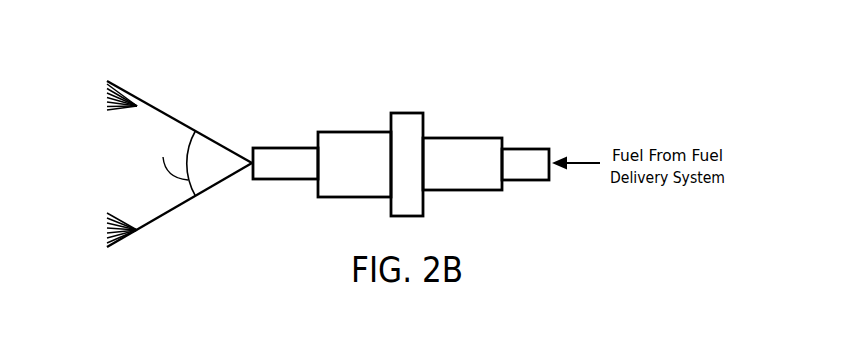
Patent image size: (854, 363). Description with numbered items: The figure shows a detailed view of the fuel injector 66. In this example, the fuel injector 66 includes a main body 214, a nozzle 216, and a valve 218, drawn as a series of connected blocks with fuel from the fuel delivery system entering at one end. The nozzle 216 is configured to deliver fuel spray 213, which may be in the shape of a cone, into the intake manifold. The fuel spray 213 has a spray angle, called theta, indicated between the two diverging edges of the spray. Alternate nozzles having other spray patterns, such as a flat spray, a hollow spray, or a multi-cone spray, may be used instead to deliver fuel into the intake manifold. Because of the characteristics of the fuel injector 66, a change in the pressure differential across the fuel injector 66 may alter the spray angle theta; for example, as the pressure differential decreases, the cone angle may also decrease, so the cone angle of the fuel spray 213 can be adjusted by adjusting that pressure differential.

The fuel injector 66 is at (385, 114).
The fuel spray 213 is at (137, 232).
The main body 214 is at (373, 131).
The nozzle 216 is at (293, 147).
The valve 218 is at (407, 112).